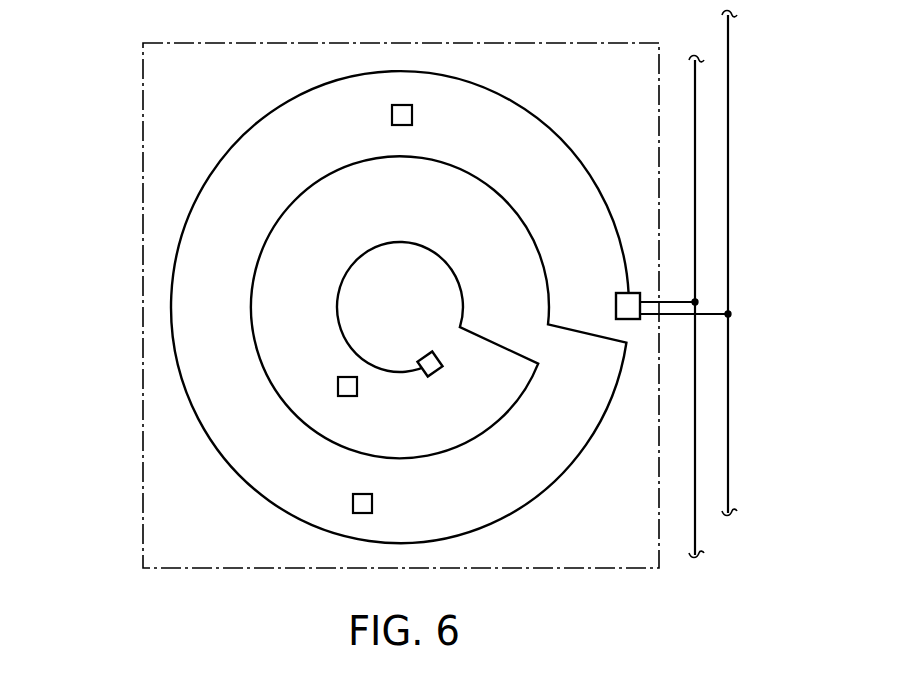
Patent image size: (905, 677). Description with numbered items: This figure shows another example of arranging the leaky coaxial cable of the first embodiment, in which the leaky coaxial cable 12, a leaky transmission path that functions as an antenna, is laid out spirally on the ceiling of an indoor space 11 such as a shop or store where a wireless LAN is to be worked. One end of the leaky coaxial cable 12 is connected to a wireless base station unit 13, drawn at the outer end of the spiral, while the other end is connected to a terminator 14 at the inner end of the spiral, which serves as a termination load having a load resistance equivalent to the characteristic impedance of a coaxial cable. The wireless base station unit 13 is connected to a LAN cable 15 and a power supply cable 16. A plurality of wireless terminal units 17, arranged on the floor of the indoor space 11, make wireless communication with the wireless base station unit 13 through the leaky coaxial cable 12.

The indoor space 11 is at (143, 190).
The leaky coaxial cable 12 is at (551, 123).
The wireless base station unit 13 is at (628, 293).
The terminator 14 is at (425, 353).
The LAN cable 15 is at (728, 222).
The power supply cable 16 is at (695, 163).
The wireless terminal units 17 is at (392, 115).